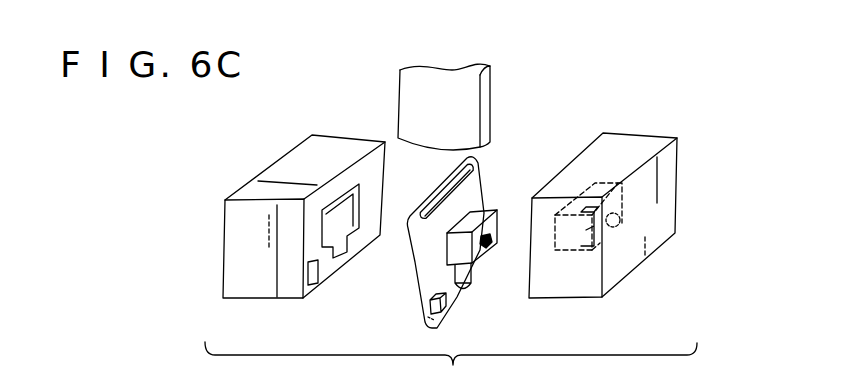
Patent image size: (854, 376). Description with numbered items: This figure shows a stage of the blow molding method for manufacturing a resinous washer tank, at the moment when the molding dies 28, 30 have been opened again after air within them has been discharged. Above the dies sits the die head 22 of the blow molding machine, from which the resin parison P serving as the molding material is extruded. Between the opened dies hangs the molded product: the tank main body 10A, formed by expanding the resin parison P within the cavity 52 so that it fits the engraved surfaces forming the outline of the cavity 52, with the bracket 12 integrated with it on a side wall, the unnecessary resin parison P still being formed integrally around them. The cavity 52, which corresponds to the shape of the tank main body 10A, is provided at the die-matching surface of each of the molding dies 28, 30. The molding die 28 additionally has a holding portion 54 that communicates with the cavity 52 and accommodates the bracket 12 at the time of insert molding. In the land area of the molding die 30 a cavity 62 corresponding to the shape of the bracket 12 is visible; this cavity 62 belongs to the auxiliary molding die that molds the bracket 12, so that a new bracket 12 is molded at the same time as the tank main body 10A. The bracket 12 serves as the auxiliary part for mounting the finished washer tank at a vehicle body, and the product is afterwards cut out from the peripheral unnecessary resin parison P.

The tank main body 10A is at (480, 215).
The bracket 12 is at (497, 235).
The die head 22 is at (492, 82).
The molding die 28 is at (667, 160).
The molding die 30 is at (275, 175).
The cavity 52 is at (347, 200).
The holding portion 54 is at (620, 223).
The cavity for molding an auxiliary part 62 is at (320, 277).
The resin parison P is at (478, 160).